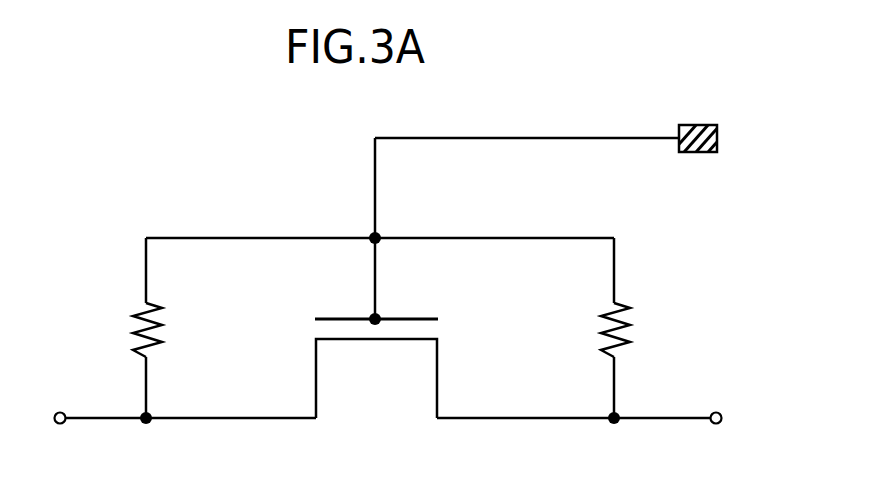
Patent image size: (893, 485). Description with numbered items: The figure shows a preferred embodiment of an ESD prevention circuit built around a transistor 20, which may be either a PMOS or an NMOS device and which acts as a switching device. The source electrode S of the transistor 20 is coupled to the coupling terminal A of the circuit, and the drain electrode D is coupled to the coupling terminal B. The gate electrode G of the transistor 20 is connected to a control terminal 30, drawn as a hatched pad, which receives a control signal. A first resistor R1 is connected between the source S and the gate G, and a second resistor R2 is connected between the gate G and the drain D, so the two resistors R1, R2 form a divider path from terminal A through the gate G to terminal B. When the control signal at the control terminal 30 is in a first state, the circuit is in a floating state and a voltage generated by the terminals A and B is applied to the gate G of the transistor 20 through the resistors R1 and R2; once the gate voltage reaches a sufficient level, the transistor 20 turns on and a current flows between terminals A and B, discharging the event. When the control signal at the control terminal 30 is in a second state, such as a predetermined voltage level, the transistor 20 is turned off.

The transistor 20 is at (345, 314).
The control terminal 30 is at (717, 137).
The first resistor R1 is at (122, 330).
The second resistor R2 is at (643, 330).
The coupling terminal A is at (57, 441).
The coupling terminal B is at (716, 439).
The gate electrode G is at (376, 290).
The source electrode S is at (341, 404).
The drain electrode D is at (410, 404).